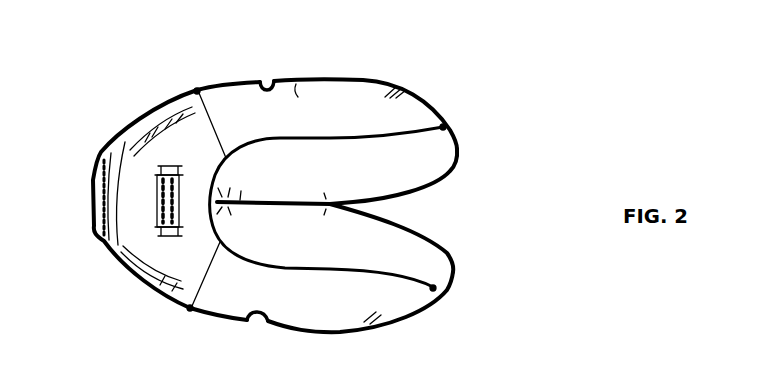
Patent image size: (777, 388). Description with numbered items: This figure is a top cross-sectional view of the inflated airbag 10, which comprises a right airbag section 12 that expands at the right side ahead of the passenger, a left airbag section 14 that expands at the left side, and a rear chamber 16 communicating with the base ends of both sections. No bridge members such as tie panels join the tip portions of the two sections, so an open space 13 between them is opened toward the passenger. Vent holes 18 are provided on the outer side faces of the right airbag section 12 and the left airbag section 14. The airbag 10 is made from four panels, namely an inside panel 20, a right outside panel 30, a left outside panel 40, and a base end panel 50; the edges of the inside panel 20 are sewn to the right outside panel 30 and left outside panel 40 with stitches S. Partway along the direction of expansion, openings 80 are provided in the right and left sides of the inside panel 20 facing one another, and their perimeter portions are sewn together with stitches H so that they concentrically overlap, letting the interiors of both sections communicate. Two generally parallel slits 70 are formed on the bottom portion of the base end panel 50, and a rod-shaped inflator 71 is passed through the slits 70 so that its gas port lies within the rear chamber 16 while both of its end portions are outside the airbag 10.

The airbag 10 is at (472, 129).
The right airbag section 12 is at (442, 114).
The open space 13 is at (393, 206).
The left airbag section 14 is at (411, 285).
The rear chamber 16 is at (136, 134).
The vent hole 18 is at (270, 349).
The inside panel 20 is at (448, 245).
The right outside panel 30 is at (362, 79).
The left outside panel 40 is at (401, 324).
The base end panel 50 is at (142, 282).
The slit 70 is at (176, 170).
The inflator 71 is at (158, 204).
The opening 80 is at (298, 232).
The stitches H is at (330, 203).
The stitches S is at (102, 163).